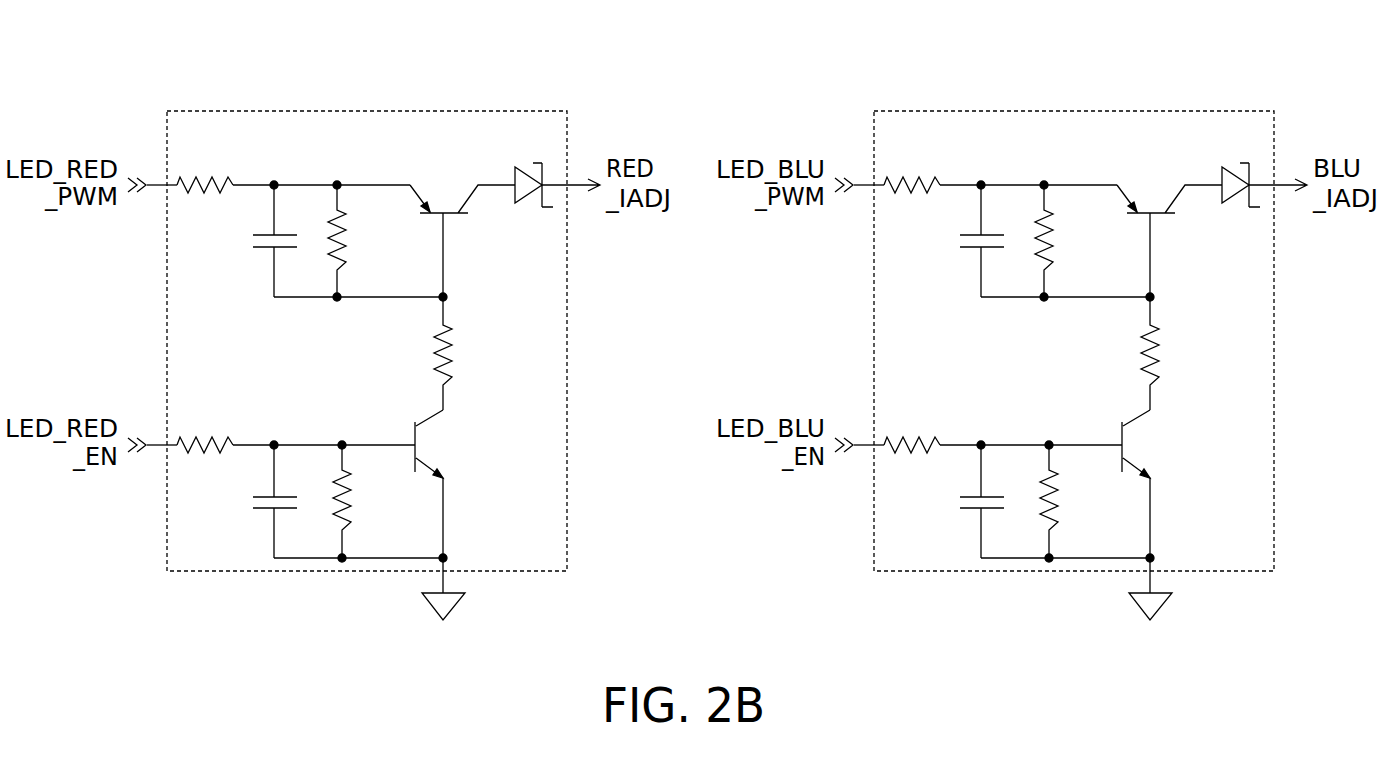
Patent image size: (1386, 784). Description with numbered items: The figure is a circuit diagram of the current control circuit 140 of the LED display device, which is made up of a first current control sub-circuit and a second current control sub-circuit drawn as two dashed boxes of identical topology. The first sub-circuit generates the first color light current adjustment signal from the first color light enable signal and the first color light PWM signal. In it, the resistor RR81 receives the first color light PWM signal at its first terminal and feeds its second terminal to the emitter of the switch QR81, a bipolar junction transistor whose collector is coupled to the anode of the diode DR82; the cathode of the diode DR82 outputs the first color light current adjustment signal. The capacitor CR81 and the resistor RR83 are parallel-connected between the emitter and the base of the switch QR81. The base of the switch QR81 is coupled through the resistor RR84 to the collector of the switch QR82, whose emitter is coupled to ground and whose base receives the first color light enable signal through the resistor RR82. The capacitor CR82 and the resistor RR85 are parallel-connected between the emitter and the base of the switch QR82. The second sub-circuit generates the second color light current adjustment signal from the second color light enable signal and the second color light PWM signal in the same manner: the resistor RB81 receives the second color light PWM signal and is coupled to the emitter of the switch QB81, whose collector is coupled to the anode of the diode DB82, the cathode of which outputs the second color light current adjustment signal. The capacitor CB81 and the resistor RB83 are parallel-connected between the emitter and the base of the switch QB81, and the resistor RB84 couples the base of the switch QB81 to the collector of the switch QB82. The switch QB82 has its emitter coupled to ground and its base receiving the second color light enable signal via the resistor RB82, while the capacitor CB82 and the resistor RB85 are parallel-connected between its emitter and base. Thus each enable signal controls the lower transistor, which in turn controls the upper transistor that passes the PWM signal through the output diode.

The current control circuit 140 is at (1345, 63).
The resistor RR81 is at (206, 168).
The capacitor CR81 is at (246, 241).
The resistor RR83 is at (369, 241).
The switch QR81 is at (457, 212).
The diode DR82 is at (530, 171).
The resistor RR84 is at (478, 353).
The resistor RR82 is at (206, 429).
The capacitor CR82 is at (246, 501).
The resistor RR85 is at (374, 501).
The switch QR82 is at (454, 474).
The resistor RB81 is at (913, 168).
The capacitor CB81 is at (953, 241).
The resistor RB83 is at (1076, 241).
The switch QB81 is at (1164, 212).
The diode DB82 is at (1237, 171).
The resistor RB84 is at (1185, 353).
The resistor RB82 is at (913, 429).
The capacitor CB82 is at (953, 501).
The resistor RB85 is at (1081, 501).
The switch QB82 is at (1161, 474).